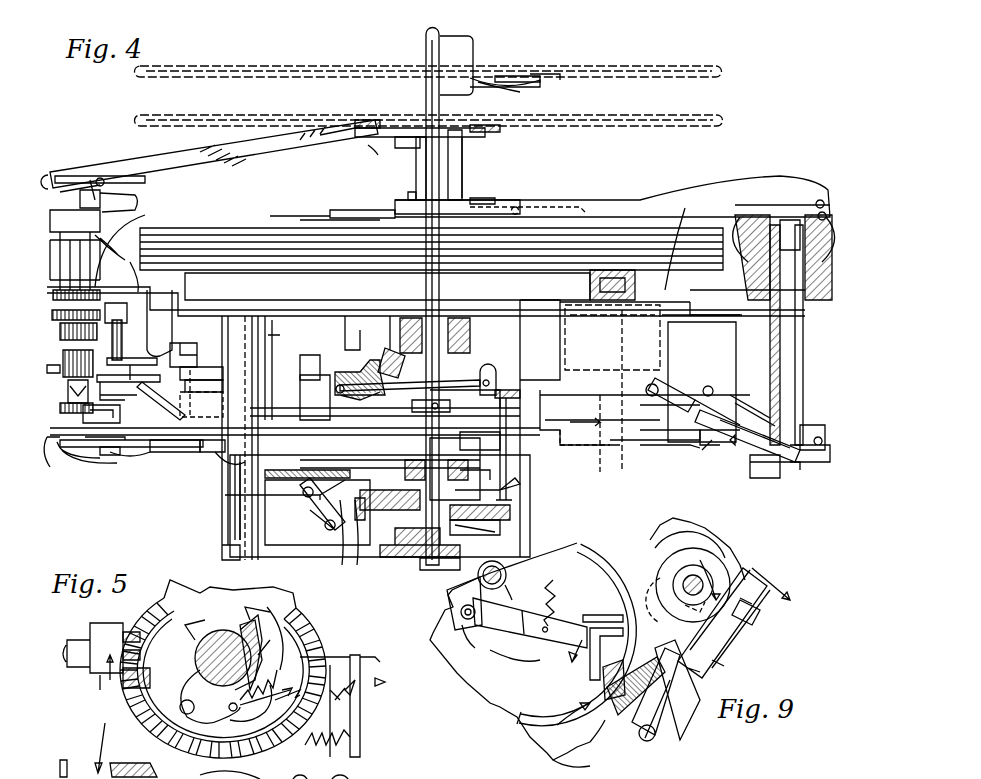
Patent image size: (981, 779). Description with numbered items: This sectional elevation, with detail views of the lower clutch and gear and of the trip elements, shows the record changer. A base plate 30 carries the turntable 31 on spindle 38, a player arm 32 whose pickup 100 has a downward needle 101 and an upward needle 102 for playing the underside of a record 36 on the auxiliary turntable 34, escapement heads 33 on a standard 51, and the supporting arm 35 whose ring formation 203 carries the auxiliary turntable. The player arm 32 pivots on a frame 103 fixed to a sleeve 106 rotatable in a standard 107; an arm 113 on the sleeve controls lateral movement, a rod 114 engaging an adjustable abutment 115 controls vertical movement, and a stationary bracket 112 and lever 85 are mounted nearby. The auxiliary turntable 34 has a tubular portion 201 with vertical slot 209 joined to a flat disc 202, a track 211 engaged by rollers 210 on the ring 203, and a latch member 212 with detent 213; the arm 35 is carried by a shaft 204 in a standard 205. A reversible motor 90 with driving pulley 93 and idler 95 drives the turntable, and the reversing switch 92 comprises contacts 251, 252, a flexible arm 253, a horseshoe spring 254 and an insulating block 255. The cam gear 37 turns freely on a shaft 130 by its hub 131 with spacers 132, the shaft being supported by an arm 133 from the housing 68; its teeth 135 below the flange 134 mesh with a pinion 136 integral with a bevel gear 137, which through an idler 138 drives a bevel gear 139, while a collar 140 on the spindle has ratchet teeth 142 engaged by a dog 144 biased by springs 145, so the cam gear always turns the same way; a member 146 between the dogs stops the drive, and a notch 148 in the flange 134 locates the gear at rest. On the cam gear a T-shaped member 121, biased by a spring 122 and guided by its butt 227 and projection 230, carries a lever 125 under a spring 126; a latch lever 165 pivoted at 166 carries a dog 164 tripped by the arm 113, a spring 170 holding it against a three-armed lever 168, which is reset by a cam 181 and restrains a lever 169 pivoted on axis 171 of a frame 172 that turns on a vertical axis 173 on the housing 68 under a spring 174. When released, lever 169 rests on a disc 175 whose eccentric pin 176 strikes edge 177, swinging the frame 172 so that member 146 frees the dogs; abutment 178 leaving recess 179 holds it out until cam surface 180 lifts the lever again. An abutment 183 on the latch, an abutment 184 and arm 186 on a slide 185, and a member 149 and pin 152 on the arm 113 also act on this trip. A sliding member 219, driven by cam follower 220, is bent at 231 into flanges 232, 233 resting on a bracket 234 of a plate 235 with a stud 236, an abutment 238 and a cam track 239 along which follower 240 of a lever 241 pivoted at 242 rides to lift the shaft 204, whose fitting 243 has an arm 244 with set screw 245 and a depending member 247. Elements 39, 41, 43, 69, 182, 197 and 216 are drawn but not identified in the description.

In FIG. 4, the frame 30 is at (692, 299).
In FIG. 4, the stack 31 is at (330, 292).
In FIG. 4, the arm 32 is at (246, 167).
In FIG. 4, the member 33 is at (538, 84).
In FIG. 4, the member 34 is at (490, 132).
In FIG. 4, the bar 35 is at (655, 208).
In FIG. 4, the rod 36 is at (598, 121).
In FIG. 4, the pawl 37 is at (336, 418).
In FIG. 9, the pawl 37 is at (520, 680).
In FIG. 4, the shaft 38 is at (426, 32).
In FIG. 5, the shaft 38 is at (215, 625).
In FIG. 9, the shaft 38 is at (665, 570).
In FIG. 4, the rod 39 is at (614, 76).
In FIG. 4, the spring 41 is at (498, 93).
In FIG. 4, the plate 43 is at (555, 78).
In FIG. 4, the sleeve 51 is at (470, 172).
In FIG. 4, the foot 68 is at (418, 565).
In FIG. 4, the shaft 69 is at (422, 404).
In FIG. 4, the post 85 is at (75, 260).
In FIG. 4, the box 90 is at (606, 340).
In FIG. 4, the link 92 is at (302, 512).
In FIG. 4, the block 93 is at (635, 283).
In FIG. 4, the plate 95 is at (677, 245).
In FIG. 4, the arm 100 is at (345, 140).
In FIG. 4, the pin 101 is at (378, 156).
In FIG. 4, the pad 102 is at (380, 120).
In FIG. 4, the bar 103 is at (70, 176).
In FIG. 4, the bracket 106 is at (105, 232).
In FIG. 4, the bracket 107 is at (135, 205).
In FIG. 4, the block 112 is at (122, 332).
In FIG. 4, the block 113 is at (128, 358).
In FIG. 4, the pin 114 is at (100, 195).
In FIG. 4, the pin 115 is at (92, 178).
In FIG. 4, the plate 121 is at (165, 452).
In FIG. 4, the block 122 is at (192, 410).
In FIG. 4, the pad 125 is at (122, 450).
In FIG. 4, the plate 126 is at (83, 420).
In FIG. 4, the post 130 is at (238, 478).
In FIG. 9, the post 130 is at (506, 582).
In FIG. 4, the rod 131 is at (258, 389).
In FIG. 9, the rod 131 is at (508, 597).
In FIG. 4, the column 132 is at (222, 330).
In FIG. 4, the housing 133 is at (292, 545).
In FIG. 4, the lug 134 is at (55, 460).
In FIG. 9, the lug 134 is at (602, 736).
In FIG. 4, the spring 135 is at (112, 463).
In FIG. 4, the bearing 136 is at (480, 440).
In FIG. 4, the gear 137 is at (500, 485).
In FIG. 9, the gear 137 is at (700, 548).
In FIG. 4, the arm 138 is at (378, 518).
In FIG. 5, the arm 138 is at (90, 685).
In FIG. 4, the bracket 139 is at (420, 541).
In FIG. 5, the bracket 139 is at (128, 690).
In FIG. 4, the hub 140 is at (480, 535).
In FIG. 5, the hub 140 is at (205, 635).
In FIG. 5, the cam 142 is at (232, 612).
In FIG. 5, the spring 144 is at (185, 690).
In FIG. 5, the pin 145 is at (236, 694).
In FIG. 4, the lever 146 is at (480, 520).
In FIG. 5, the lever 146 is at (340, 640).
In FIG. 9, the lug 148 is at (578, 752).
In FIG. 4, the block 149 is at (105, 318).
In FIG. 4, the plate 152 is at (160, 400).
In FIG. 4, the stop 164 is at (200, 358).
In FIG. 4, the lever 165 is at (298, 400).
In FIG. 9, the lever 165 is at (520, 625).
In FIG. 9, the pivot 166 is at (476, 641).
In FIG. 4, the bracket 168 is at (338, 362).
In FIG. 9, the bracket 168 is at (625, 615).
In FIG. 4, the pawl 169 is at (447, 380).
In FIG. 5, the pawl 169 is at (145, 765).
In FIG. 9, the pawl 169 is at (640, 655).
In FIG. 9, the spring 170 is at (560, 585).
In FIG. 4, the pin 171 is at (500, 385).
In FIG. 9, the pin 171 is at (760, 618).
In FIG. 4, the rod 172 is at (508, 385).
In FIG. 5, the rod 172 is at (358, 735).
In FIG. 9, the rod 172 is at (740, 660).
In FIG. 9, the pin 173 is at (650, 745).
In FIG. 4, the arrow 174 is at (498, 498).
In FIG. 5, the arrow 174 is at (355, 715).
In FIG. 5, the segment 175 is at (275, 773).
In FIG. 9, the segment 175 is at (640, 560).
In FIG. 4, the lug 176 is at (486, 372).
In FIG. 9, the lug 176 is at (722, 555).
In FIG. 9, the arrow 177 is at (745, 560).
In FIG. 4, the link 178 is at (452, 404).
In FIG. 9, the link 178 is at (695, 694).
In FIG. 9, the slot 179 is at (662, 580).
In FIG. 4, the pawl 180 is at (392, 348).
In FIG. 5, the pawl 180 is at (105, 745).
In FIG. 9, the pawl 180 is at (583, 690).
In FIG. 4, the plate 181 is at (192, 388).
In FIG. 4, the bar 182 is at (148, 384).
In FIG. 4, the plate 183 is at (192, 378).
In FIG. 4, the rib 184 is at (135, 264).
In FIG. 4, the post 185 is at (270, 337).
In FIG. 4, the post 186 is at (358, 336).
In FIG. 4, the block 197 is at (64, 384).
In FIG. 4, the clamp 201 is at (418, 148).
In FIG. 4, the plate 202 is at (330, 214).
In FIG. 4, the plate 203 is at (395, 208).
In FIG. 4, the post 204 is at (768, 225).
In FIG. 4, the post 205 is at (810, 222).
In FIG. 4, the sleeve 209 is at (426, 180).
In FIG. 4, the collar 210 is at (408, 196).
In FIG. 4, the plate 211 is at (421, 128).
In FIG. 4, the link 212 is at (552, 206).
In FIG. 4, the pad 213 is at (480, 198).
In FIG. 4, the sleeve 216 is at (462, 145).
In FIG. 4, the rod 219 is at (555, 398).
In FIG. 4, the rod 220 is at (292, 418).
In FIG. 4, the block 227 is at (222, 452).
In FIG. 4, the spring 230 is at (140, 458).
In FIG. 4, the link 231 is at (547, 444).
In FIG. 4, the rod 232 is at (555, 420).
In FIG. 4, the rod 233 is at (620, 444).
In FIG. 4, the rod 234 is at (672, 448).
In FIG. 4, the box 235 is at (708, 341).
In FIG. 4, the link 236 is at (650, 445).
In FIG. 4, the pin 238 is at (708, 393).
In FIG. 4, the cylinder 239 is at (676, 390).
In FIG. 4, the plate 240 is at (704, 445).
In FIG. 4, the lever 241 is at (742, 420).
In FIG. 4, the rod 242 is at (640, 405).
In FIG. 4, the bracket 243 is at (818, 425).
In FIG. 4, the rod 244 is at (742, 403).
In FIG. 4, the rod 245 is at (738, 395).
In FIG. 4, the block 247 is at (780, 470).
In FIG. 4, the wire 251 is at (342, 560).
In FIG. 4, the plate 252 is at (295, 478).
In FIG. 4, the rod 253 is at (225, 508).
In FIG. 4, the wire 254 is at (358, 565).
In FIG. 4, the spring 255 is at (224, 472).